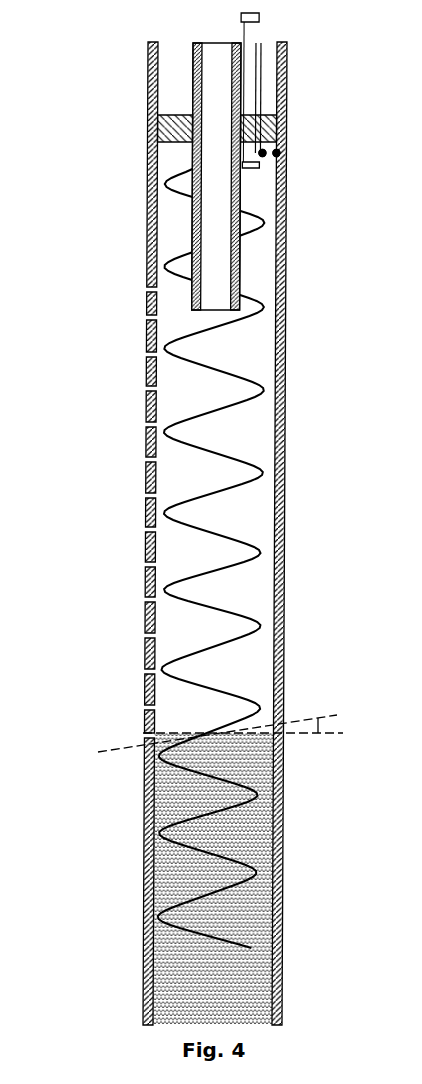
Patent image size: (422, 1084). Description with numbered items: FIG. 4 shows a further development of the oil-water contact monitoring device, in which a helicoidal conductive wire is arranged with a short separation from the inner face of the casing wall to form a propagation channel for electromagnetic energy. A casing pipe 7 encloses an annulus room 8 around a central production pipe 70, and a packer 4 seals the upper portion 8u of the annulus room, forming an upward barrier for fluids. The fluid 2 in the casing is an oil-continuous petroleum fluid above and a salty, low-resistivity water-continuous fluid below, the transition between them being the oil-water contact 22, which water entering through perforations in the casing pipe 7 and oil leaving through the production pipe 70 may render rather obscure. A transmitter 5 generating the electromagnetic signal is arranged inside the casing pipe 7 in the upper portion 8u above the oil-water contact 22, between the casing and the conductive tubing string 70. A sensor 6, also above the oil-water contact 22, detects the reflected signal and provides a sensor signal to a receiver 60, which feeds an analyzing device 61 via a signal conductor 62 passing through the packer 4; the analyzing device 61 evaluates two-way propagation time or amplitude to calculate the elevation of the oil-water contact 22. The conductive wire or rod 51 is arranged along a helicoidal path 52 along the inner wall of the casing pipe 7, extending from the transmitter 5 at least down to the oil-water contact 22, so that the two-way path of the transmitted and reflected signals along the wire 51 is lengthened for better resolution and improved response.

The fluid 2 is at (175, 300).
The packer 4 is at (150, 109).
The transmitter 5 is at (283, 128).
The sensor 6 is at (258, 168).
The receiver 60 is at (315, 170).
The analyzing device 61 is at (259, 22).
The signal conductor 62 is at (244, 108).
The casing pipe 7 is at (148, 180).
The annulus room 8 is at (165, 250).
The upper portion of the annulus room 8u is at (173, 158).
The oil-water contact 22 is at (150, 732).
The conductive wire or rod 51 is at (267, 380).
The helicoidal path 52 is at (325, 362).
The central production pipe 70 is at (241, 275).